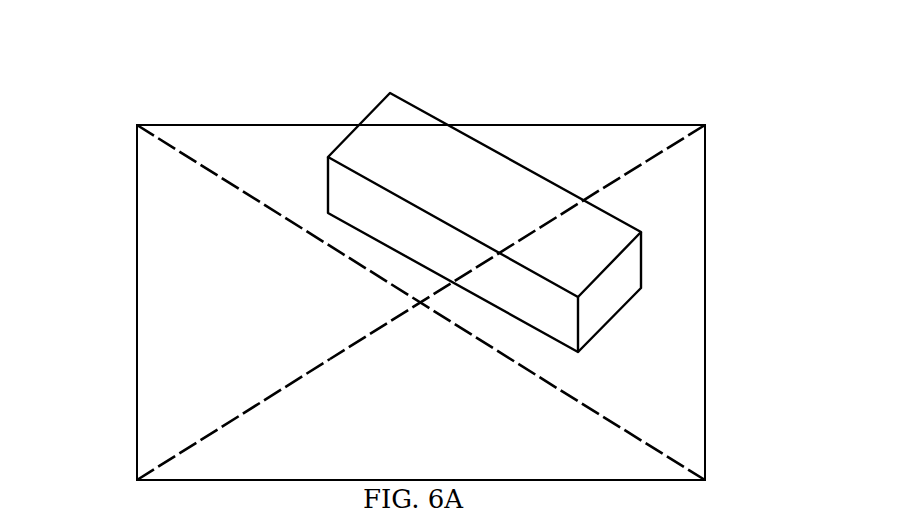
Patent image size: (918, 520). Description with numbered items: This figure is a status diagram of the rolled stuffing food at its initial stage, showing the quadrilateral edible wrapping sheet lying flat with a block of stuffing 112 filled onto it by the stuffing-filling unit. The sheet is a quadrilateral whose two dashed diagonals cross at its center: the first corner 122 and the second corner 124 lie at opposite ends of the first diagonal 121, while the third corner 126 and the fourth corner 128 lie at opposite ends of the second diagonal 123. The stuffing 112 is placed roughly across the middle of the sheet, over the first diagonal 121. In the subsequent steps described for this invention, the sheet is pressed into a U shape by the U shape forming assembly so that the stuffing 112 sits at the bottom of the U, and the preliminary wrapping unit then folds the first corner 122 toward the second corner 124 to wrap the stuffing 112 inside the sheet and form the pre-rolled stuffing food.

The stuffing 112 is at (397, 126).
The first diagonal 121 is at (585, 175).
The first corner 122 is at (662, 156).
The second diagonal 123 is at (601, 387).
The second corner 124 is at (170, 409).
The third corner 126 is at (150, 160).
The fourth corner 128 is at (692, 433).